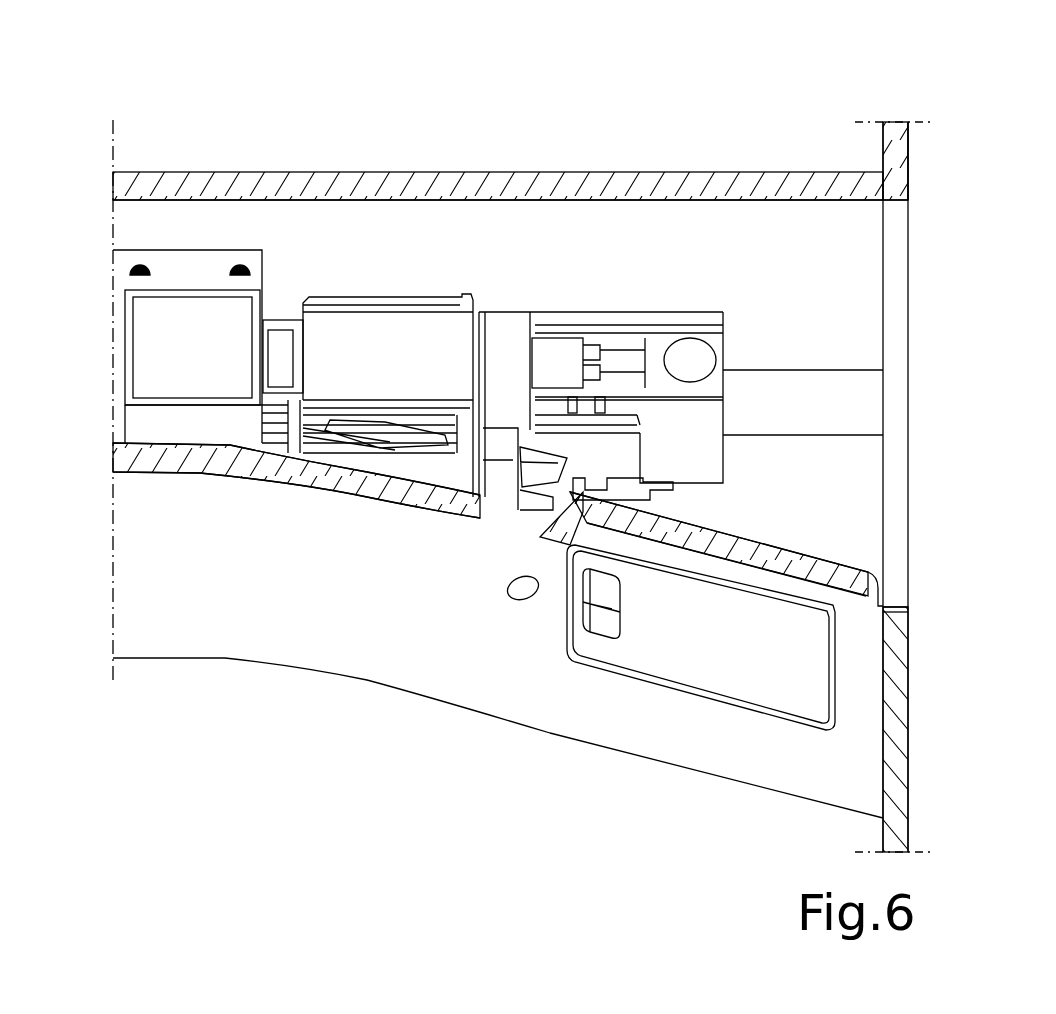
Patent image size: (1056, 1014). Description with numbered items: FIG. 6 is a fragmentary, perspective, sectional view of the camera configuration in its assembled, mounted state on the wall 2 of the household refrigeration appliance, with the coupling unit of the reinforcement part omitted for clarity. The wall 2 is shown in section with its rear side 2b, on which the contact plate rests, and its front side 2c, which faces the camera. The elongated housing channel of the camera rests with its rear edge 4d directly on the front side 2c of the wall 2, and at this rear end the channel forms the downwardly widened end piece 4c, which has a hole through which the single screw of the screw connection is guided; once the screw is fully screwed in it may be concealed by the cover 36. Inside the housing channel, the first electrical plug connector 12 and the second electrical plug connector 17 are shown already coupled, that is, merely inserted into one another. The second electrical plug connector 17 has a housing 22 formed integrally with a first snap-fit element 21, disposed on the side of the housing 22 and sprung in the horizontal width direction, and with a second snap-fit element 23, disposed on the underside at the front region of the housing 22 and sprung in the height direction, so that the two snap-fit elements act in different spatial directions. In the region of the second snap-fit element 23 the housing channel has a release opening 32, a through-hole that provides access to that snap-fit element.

The wall 2 is at (897, 120).
The rear side of the wall 2b is at (908, 140).
The front side of the wall 2c is at (883, 145).
The widened end piece 4c is at (665, 730).
The rear edge 4d is at (908, 622).
The first electrical plug connector 12 is at (190, 318).
The second electrical plug connector 17 is at (405, 292).
The first snap-fit element 21 is at (640, 318).
The housing 22 is at (513, 307).
The second snap-fit element 23 is at (530, 482).
The release opening 32 is at (523, 590).
The cover 36 is at (758, 690).